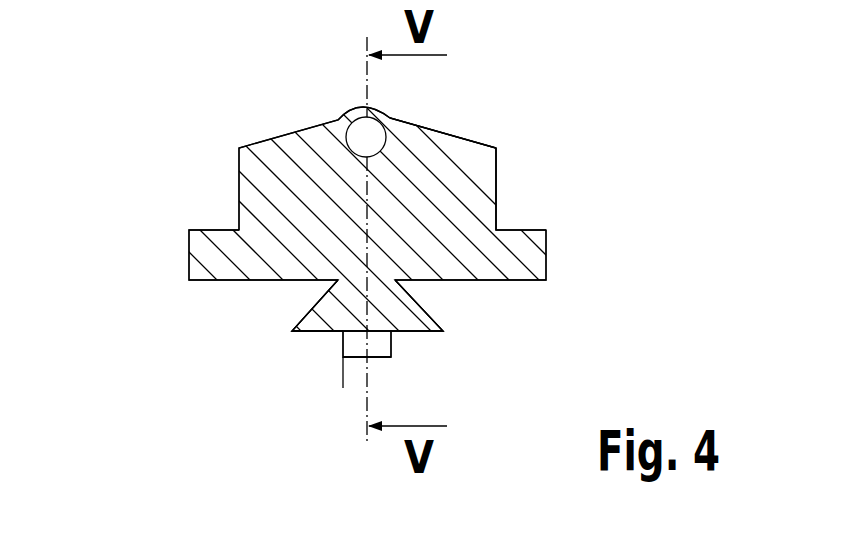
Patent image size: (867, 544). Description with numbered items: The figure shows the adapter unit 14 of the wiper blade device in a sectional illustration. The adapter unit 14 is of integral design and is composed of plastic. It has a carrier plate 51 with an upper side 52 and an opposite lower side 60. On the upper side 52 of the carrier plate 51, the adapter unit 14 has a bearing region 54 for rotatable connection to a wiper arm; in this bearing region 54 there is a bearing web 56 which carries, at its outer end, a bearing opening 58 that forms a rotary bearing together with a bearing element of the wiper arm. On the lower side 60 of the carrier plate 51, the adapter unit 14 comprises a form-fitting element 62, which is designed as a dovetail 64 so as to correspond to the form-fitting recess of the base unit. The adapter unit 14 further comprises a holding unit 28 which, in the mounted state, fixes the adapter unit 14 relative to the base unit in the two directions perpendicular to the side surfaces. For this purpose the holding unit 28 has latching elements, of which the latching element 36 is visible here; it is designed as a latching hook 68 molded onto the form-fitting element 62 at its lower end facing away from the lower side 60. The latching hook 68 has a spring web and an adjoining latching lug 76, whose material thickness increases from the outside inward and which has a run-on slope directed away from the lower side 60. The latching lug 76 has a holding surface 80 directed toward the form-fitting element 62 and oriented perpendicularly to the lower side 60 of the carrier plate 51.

The adapter unit 14 is at (523, 251).
The holding unit 28 is at (330, 367).
The latching element 36 is at (386, 352).
The carrier plate 51 is at (207, 258).
The upper side 52 is at (521, 225).
The bearing region 54 is at (214, 197).
The bearing web 56 is at (460, 152).
The bearing opening 58 is at (348, 120).
The lower side 60 is at (520, 285).
The form-fitting element 62 is at (313, 318).
The dovetail 64 is at (367, 305).
The latching hook 68 is at (367, 344).
The latching lug 76 is at (395, 357).
The holding surface 80 is at (357, 341).